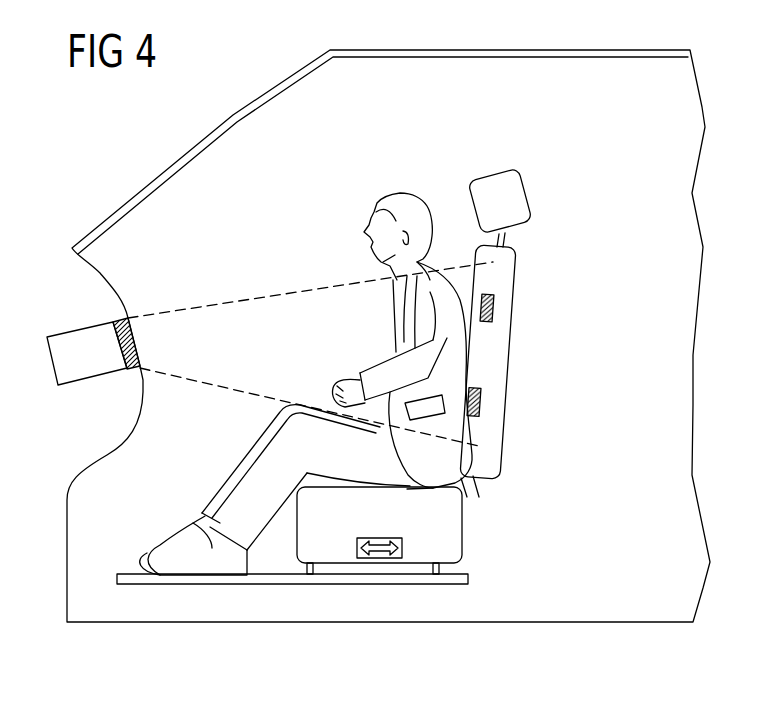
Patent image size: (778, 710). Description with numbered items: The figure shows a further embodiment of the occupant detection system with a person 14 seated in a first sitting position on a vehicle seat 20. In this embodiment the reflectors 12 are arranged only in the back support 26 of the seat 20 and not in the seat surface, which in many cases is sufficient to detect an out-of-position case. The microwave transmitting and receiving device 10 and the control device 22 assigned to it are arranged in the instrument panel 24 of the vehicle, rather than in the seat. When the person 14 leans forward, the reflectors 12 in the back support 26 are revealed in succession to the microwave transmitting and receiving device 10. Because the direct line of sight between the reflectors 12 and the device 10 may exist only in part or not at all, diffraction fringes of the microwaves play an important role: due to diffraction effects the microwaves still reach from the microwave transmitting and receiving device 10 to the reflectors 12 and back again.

The microwave transmitting and receiving device 10 is at (140, 360).
The reflectors 12 is at (496, 312).
The person 14 is at (410, 318).
The seat 20 is at (448, 547).
The control device 22 is at (80, 342).
The instrument panel 24 is at (86, 411).
The back support 26 is at (517, 268).